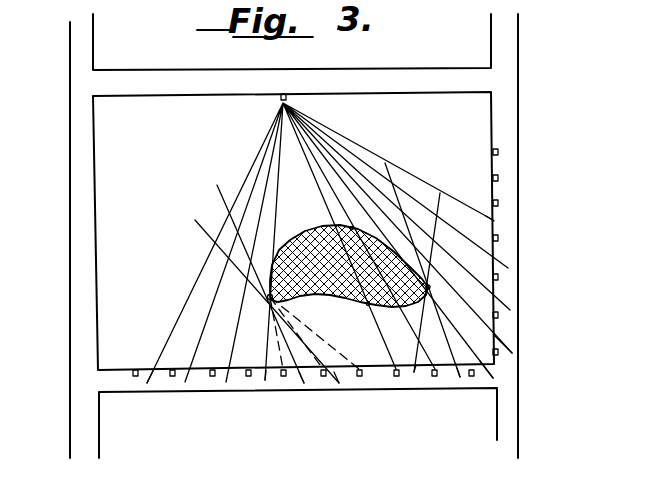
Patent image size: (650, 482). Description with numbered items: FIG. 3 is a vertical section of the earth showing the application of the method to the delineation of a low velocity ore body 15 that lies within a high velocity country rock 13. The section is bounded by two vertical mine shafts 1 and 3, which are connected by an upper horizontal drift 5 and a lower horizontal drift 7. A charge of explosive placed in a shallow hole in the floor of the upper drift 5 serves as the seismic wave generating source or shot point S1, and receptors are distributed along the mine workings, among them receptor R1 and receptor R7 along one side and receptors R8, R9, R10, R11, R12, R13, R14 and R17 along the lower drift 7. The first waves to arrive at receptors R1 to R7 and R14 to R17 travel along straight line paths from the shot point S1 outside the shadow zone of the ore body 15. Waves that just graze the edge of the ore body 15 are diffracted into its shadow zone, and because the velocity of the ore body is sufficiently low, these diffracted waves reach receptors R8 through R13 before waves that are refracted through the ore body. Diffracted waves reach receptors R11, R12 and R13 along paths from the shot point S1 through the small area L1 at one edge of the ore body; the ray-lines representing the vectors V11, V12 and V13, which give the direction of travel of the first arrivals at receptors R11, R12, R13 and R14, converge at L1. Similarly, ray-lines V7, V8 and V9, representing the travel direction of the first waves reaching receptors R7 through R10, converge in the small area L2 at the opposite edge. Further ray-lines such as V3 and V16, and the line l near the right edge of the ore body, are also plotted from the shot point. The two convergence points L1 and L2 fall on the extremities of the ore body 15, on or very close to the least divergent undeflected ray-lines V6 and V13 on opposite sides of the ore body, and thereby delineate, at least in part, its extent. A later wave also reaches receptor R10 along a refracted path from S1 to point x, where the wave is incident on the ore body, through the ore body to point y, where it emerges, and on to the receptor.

The vertical shaft 1 is at (70, 50).
The vertical shaft 3 is at (510, 47).
The upper horizontal drift 5 is at (128, 82).
The lower horizontal drift 7 is at (115, 385).
The high velocity country rock 13 is at (176, 166).
The low velocity ore body 15 is at (296, 234).
The seismic wave generating source S1 is at (290, 104).
The point of ray-line convergence L1 is at (267, 298).
The point of ray-line convergence L2 is at (428, 292).
The ray line l is at (388, 165).
The point of incidence x is at (354, 218).
The point of emergence y is at (366, 302).
The receptor R1 is at (499, 152).
The ray arrival point V3 is at (494, 221).
The undeflected ray-line V6 is at (503, 347).
The receptor R7 is at (499, 352).
The ray-line V7 is at (494, 378).
The receptor R8 is at (471, 377).
The ray-line V8 is at (460, 377).
The receptor R9 is at (434, 377).
The ray-line V9 is at (417, 373).
The receptor R10 is at (396, 377).
The receptor R11 is at (359, 377).
The ray-line vector V11 is at (339, 383).
The receptor R12 is at (323, 377).
The ray-line vector V12 is at (304, 383).
The receptor R13 is at (283, 377).
The ray-line vector V13 is at (265, 381).
The receptor R14 is at (248, 377).
The ray arrival point V16 is at (148, 384).
The receptor R17 is at (135, 377).